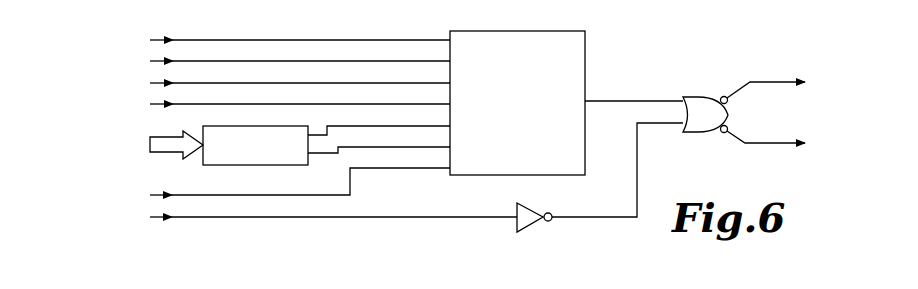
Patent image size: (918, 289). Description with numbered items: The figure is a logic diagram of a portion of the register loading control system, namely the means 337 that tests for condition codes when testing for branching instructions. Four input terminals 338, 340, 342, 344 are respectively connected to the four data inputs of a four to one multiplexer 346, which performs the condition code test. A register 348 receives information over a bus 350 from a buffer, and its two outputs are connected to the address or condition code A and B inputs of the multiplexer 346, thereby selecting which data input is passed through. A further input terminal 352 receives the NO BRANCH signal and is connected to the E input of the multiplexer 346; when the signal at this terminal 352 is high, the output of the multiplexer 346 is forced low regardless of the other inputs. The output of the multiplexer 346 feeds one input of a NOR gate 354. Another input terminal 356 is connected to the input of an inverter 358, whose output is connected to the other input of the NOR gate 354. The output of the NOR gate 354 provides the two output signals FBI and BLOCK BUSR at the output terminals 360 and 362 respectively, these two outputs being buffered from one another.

The means for testing for condition codes 337 is at (660, 58).
The input terminal 338 is at (174, 39).
The input terminal 340 is at (174, 60).
The input terminal 342 is at (174, 82).
The input terminal 344 is at (174, 103).
The 4 to 1 multiplexer 346 is at (565, 31).
The register 348 is at (285, 166).
The bus 350 is at (170, 137).
The input terminal 352 is at (172, 194).
The NOR gate 354 is at (700, 97).
The input terminal 356 is at (172, 216).
The inverter 358 is at (537, 225).
The output terminal 360 is at (803, 82).
The output terminal 362 is at (801, 143).